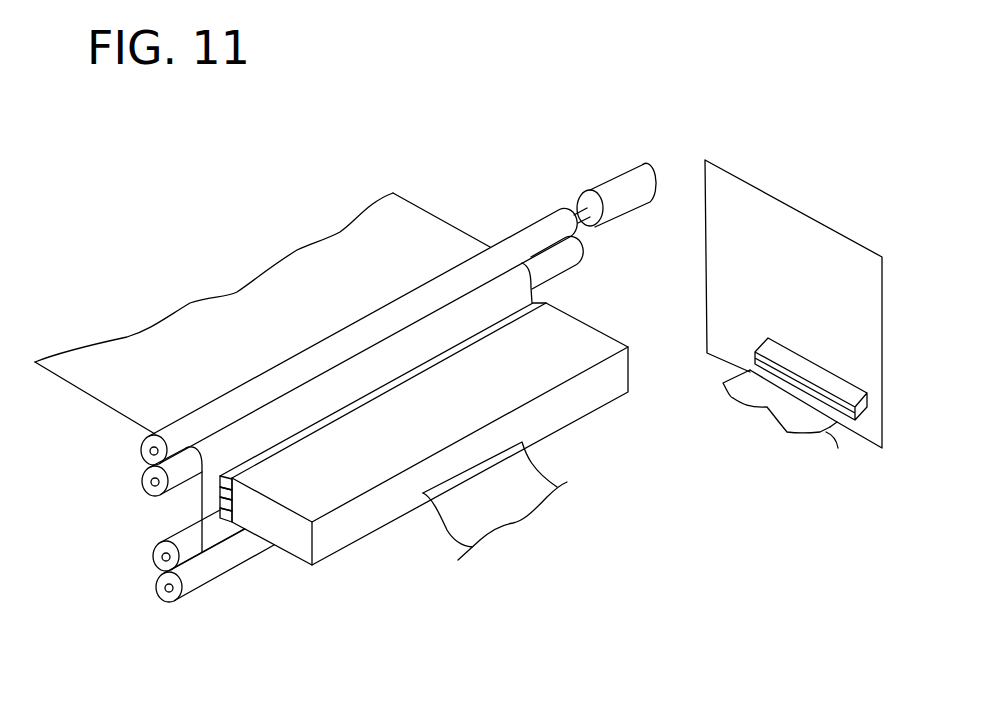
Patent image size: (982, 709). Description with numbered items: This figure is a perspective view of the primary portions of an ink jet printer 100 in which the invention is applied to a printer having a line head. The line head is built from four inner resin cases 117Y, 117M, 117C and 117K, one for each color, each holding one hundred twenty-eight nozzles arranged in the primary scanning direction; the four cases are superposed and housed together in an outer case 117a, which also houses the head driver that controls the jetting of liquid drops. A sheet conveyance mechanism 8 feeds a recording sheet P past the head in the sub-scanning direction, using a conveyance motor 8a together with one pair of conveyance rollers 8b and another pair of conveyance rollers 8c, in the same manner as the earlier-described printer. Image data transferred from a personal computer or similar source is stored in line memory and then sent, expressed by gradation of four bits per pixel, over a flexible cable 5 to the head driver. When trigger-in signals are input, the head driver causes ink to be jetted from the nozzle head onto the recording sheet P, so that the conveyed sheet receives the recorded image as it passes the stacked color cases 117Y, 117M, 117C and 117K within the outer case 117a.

The recording sheet P is at (343, 257).
The sheet conveyance mechanism 8 is at (507, 166).
The conveyance motor 8a is at (618, 179).
The paired conveyance rollers 8b is at (153, 597).
The paired conveyance rollers 8c is at (142, 483).
The ink jet printer 100 is at (416, 490).
The inner resin case 117K is at (210, 476).
The inner resin case 117Y is at (221, 492).
The inner resin case 117M is at (220, 503).
The inner resin case 117C is at (219, 513).
The outer case 117a is at (383, 520).
The flexible cable 5 is at (780, 428).